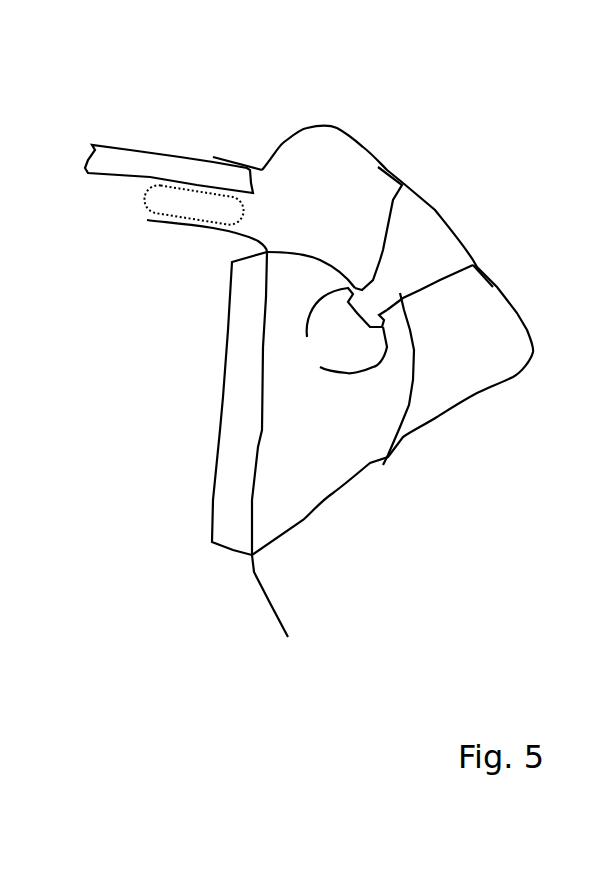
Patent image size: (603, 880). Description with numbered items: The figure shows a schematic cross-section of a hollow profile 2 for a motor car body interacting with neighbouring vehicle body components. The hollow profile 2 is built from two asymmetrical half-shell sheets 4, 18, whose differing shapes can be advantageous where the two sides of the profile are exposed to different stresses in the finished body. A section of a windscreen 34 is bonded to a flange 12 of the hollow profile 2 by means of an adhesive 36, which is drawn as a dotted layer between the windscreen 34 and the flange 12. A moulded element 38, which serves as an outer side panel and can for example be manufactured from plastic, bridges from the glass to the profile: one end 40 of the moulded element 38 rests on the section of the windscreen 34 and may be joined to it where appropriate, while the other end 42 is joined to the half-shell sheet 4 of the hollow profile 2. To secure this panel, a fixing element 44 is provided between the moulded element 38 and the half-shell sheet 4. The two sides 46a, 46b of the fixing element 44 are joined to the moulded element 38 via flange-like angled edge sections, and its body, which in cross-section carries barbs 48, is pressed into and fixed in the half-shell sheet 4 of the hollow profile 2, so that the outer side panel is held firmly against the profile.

The hollow profile 2 is at (499, 143).
The half-shell sheet 4 is at (305, 520).
The flange 12 is at (208, 228).
The half-shell sheet 18 is at (213, 443).
The windscreen 34 is at (120, 158).
The adhesive 36 is at (160, 202).
The moulded element 38 is at (520, 315).
The end of the moulded element 40 is at (242, 165).
The other end of the moulded element 42 is at (397, 448).
The fixing element 44 is at (413, 295).
The side of the fixing element 46a is at (393, 198).
The side of the fixing element 46b is at (458, 277).
The barbs 48 is at (327, 312).